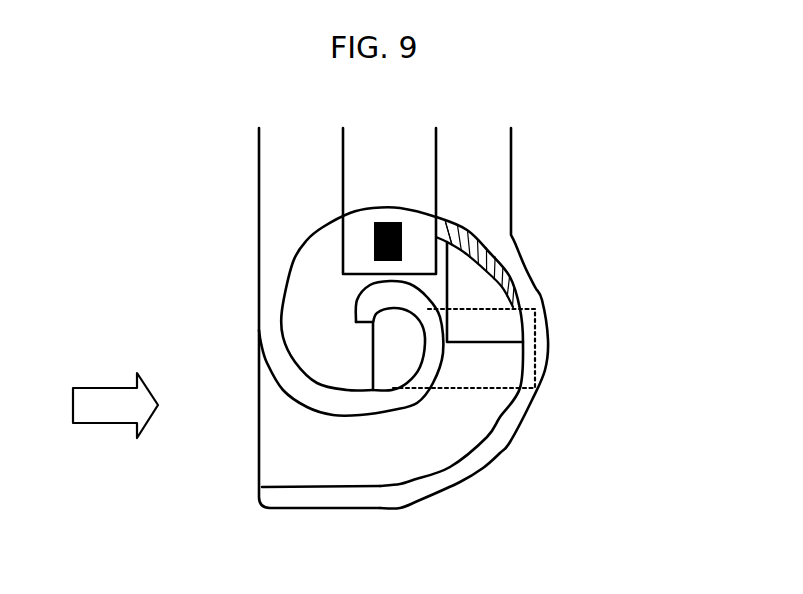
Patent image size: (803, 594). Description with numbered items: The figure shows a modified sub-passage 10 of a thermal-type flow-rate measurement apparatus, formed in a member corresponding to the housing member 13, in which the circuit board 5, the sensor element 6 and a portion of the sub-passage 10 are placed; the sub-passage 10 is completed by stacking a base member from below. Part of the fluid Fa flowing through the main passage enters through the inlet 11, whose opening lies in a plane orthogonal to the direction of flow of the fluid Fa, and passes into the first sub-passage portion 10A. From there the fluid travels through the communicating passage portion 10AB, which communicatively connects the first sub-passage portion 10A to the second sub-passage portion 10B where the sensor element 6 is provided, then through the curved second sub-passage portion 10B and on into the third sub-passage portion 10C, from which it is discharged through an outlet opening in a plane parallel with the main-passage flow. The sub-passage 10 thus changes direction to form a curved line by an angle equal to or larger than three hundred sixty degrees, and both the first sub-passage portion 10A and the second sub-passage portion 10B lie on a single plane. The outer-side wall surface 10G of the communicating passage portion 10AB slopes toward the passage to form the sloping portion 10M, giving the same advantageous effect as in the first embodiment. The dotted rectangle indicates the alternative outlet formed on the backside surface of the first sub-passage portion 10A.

The circuit board 5 is at (365, 172).
The sensor element 6 is at (374, 234).
The sub-passage 10 is at (322, 470).
The first sub-passage portion 10A is at (462, 420).
The second sub-passage portion 10B is at (318, 299).
The third sub-passage portion 10C is at (390, 368).
The outer-side wall surface 10G is at (473, 234).
The sloping portion 10M is at (473, 234).
The communicating passage portion 10AB is at (475, 290).
The inlet 11 is at (259, 467).
The housing member 13 is at (510, 442).
The fluid Fa is at (110, 410).